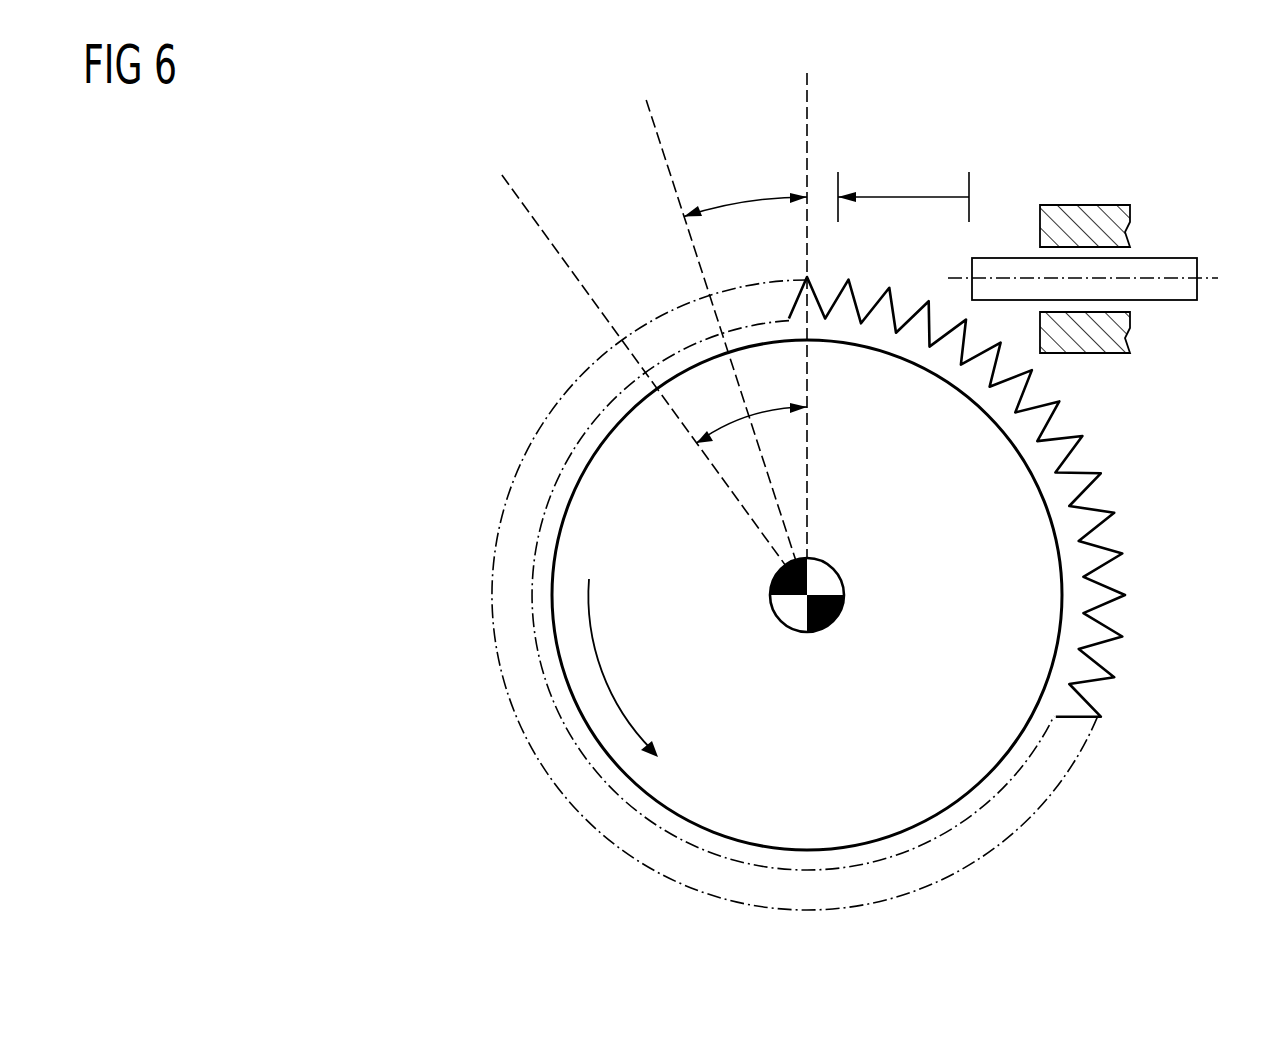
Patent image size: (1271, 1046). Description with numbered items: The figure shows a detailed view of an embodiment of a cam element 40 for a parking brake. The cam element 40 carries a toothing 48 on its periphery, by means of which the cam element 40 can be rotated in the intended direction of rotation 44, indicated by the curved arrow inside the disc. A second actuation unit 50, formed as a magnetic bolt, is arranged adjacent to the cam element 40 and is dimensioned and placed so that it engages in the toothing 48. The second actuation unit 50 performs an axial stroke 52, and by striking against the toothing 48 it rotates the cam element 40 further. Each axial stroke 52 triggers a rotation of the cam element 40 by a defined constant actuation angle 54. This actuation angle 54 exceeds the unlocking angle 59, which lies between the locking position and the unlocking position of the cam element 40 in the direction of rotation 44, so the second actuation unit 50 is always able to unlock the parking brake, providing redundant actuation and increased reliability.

The cam element 40 is at (812, 835).
The direction of rotation 44 is at (607, 675).
The toothing 48 is at (1106, 554).
The second actuation unit 50 is at (1170, 258).
The axial stroke 52 is at (905, 197).
The actuation angle 54 is at (765, 408).
The unlocking angle 59 is at (746, 197).